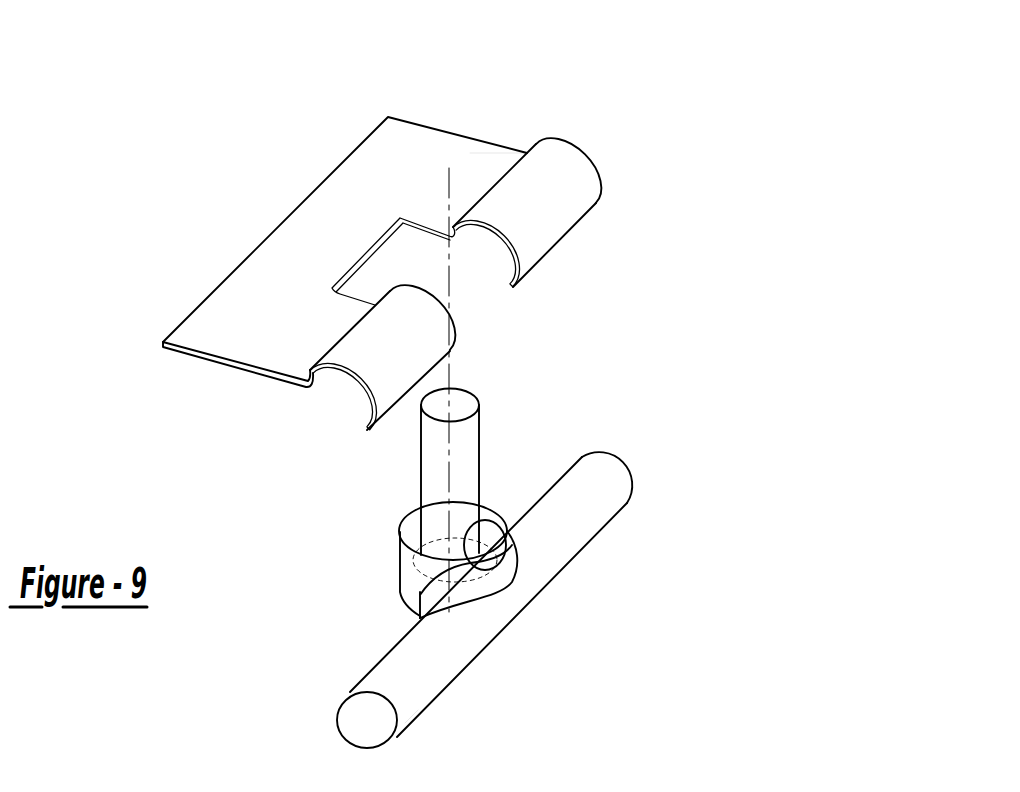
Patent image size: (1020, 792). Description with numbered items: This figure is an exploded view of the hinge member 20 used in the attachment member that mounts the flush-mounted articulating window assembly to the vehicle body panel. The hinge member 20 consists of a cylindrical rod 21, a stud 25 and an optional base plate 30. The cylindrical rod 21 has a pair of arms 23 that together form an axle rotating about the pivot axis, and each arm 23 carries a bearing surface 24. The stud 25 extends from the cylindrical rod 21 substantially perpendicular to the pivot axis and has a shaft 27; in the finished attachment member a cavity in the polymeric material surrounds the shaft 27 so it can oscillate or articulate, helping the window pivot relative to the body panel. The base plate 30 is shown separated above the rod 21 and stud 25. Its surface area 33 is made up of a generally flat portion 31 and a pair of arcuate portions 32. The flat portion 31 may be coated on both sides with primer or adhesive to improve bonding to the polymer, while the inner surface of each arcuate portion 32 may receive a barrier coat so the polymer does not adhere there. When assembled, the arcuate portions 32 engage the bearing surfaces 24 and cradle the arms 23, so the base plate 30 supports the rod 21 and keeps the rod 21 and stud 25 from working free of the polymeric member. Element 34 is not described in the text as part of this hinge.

The hinge member 20 is at (338, 538).
The cylindrical rod 21 is at (642, 475).
The arms 23 is at (607, 448).
The bearing surface 24 is at (615, 515).
The stud 25 is at (480, 419).
The shaft 27 is at (450, 265).
The base plate 30 is at (425, 315).
The flat portion 31 is at (243, 350).
The arcuate portions 32 is at (562, 193).
The surface area 33 is at (360, 187).
The plate upper edge 34 is at (470, 155).